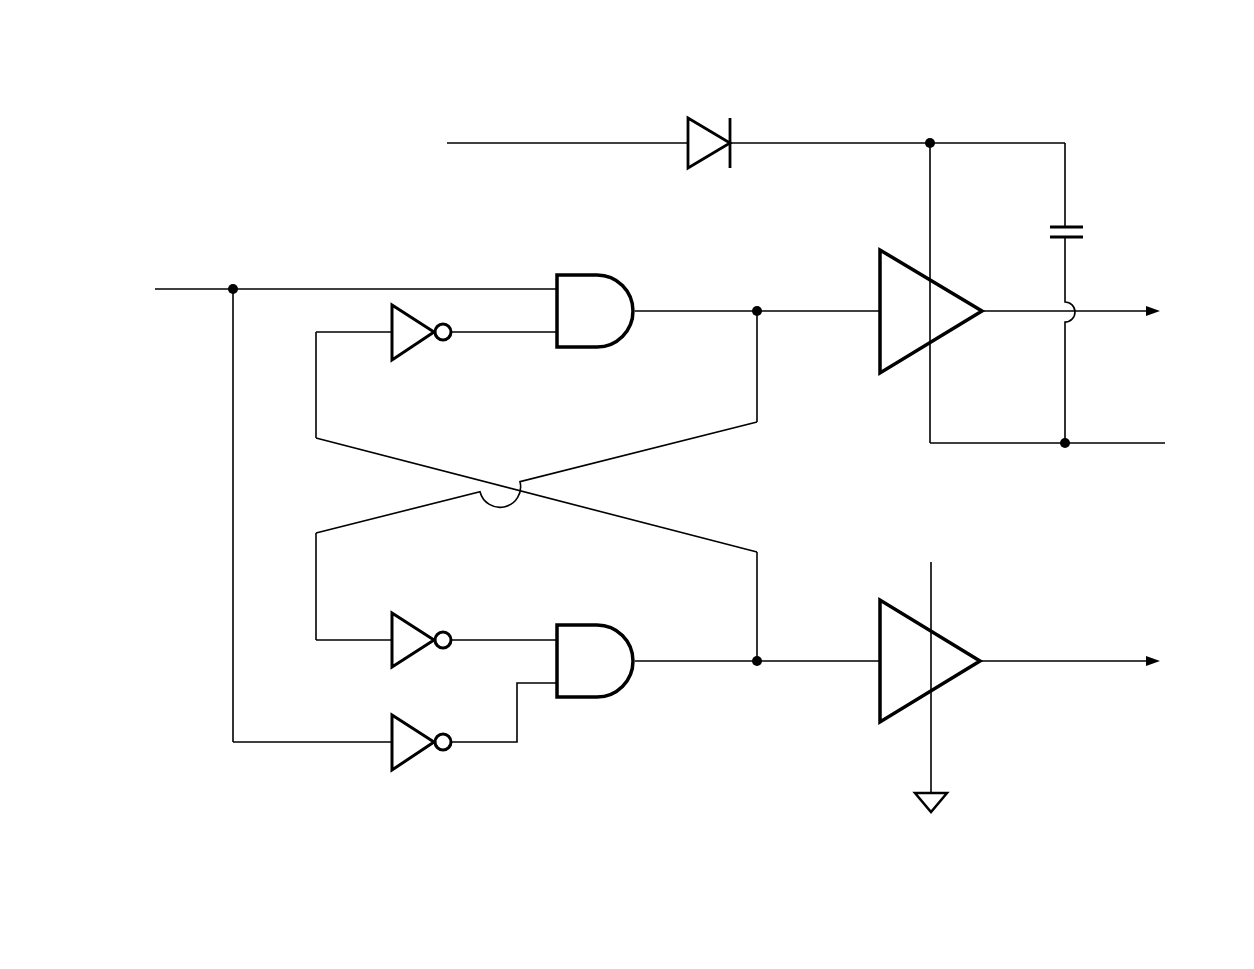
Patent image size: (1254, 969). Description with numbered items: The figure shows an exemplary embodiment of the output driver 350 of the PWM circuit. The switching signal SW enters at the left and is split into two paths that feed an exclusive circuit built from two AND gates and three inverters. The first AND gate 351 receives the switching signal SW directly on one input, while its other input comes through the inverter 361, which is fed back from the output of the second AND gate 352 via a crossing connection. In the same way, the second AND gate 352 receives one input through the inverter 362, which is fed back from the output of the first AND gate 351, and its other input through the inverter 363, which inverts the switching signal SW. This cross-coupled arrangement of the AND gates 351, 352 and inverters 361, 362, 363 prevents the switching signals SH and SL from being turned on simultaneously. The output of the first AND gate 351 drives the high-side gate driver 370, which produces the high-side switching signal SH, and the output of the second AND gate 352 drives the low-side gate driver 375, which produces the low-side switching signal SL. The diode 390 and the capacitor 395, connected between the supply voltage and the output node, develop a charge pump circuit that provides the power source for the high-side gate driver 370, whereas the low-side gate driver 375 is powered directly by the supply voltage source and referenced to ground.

The output driver 350 is at (1217, 95).
The AND gate 351 is at (598, 275).
The AND gate 352 is at (599, 624).
The inverter 361 is at (417, 352).
The inverter 362 is at (415, 618).
The inverter 363 is at (415, 720).
The high-side gate driver 370 is at (948, 290).
The low-side gate driver 375 is at (948, 638).
The diode 390 is at (710, 114).
The capacitor 395 is at (1075, 222).